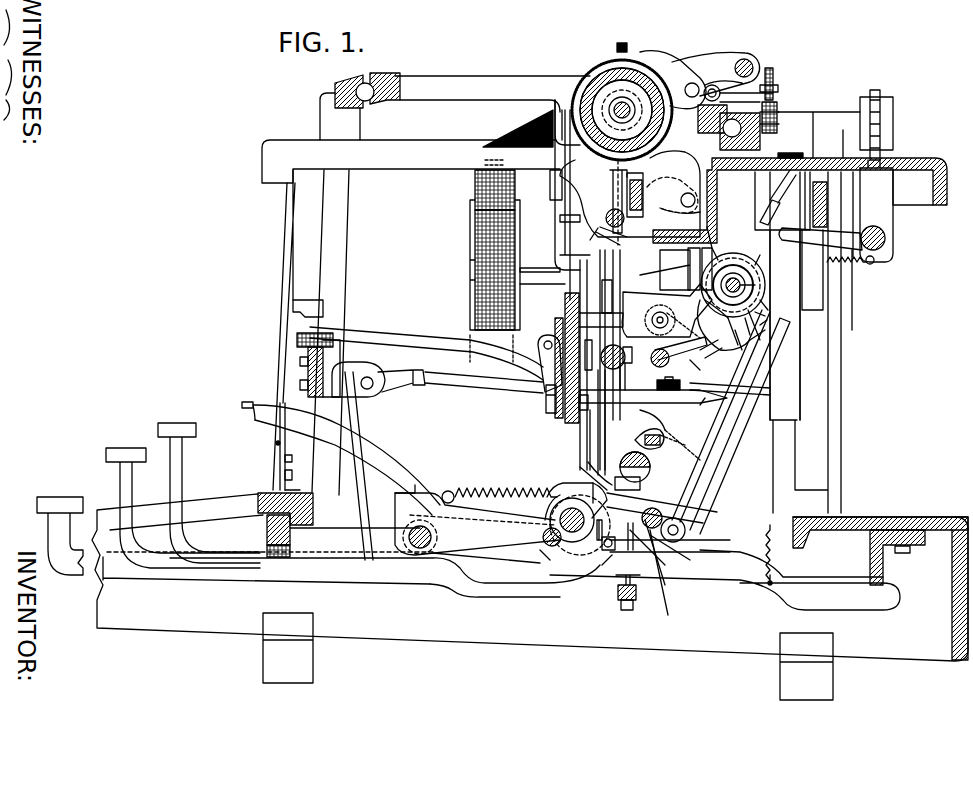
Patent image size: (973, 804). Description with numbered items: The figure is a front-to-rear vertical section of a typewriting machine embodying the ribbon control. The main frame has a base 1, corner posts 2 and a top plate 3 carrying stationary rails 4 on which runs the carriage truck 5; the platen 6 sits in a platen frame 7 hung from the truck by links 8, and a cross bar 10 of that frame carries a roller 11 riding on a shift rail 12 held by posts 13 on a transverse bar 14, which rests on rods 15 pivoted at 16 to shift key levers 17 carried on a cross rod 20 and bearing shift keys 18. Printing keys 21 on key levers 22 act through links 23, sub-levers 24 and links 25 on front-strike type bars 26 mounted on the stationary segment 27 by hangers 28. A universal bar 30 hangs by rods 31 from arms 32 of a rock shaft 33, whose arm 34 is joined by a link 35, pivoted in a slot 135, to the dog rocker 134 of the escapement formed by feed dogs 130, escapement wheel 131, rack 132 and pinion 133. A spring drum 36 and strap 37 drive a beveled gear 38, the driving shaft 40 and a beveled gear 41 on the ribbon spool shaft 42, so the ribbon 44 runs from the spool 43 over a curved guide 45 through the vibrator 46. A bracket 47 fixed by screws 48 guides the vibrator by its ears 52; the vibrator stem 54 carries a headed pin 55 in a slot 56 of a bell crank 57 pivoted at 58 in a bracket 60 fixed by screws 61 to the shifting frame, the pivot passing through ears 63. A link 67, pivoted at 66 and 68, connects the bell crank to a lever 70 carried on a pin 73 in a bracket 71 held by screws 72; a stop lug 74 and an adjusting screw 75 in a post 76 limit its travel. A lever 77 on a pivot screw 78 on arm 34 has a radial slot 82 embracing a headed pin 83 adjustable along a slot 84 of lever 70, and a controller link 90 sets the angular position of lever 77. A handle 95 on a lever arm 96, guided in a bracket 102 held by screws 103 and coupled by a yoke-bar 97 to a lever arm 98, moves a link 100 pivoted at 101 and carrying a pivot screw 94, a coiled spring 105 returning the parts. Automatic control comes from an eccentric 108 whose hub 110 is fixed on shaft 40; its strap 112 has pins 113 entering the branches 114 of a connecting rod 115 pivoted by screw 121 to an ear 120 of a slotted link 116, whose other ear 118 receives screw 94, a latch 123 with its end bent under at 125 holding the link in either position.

The base 1 is at (733, 508).
The corner posts 2 is at (344, 232).
The top plate 3 is at (398, 142).
The stationary rails 4 is at (345, 82).
The carriage truck 5 is at (457, 78).
The platen 6 is at (590, 80).
The platen frame 7 is at (718, 70).
The links 8 is at (677, 68).
The cross bar 10 is at (643, 216).
The roller 11 is at (611, 202).
The shift rail 12 is at (608, 215).
The posts 13 is at (628, 270).
The transverse bar 14 is at (603, 422).
The rods 15 is at (594, 440).
The pivot 16 is at (605, 550).
The shift key lever 17 is at (580, 580).
The shift key 18 is at (65, 497).
The cross rod 20 is at (438, 500).
The printing keys 21 is at (162, 432).
The key levers 22 is at (432, 584).
The links 23 is at (365, 418).
The sub-levers 24 is at (410, 390).
The links 25 is at (477, 390).
The front-strike type bars 26 is at (410, 330).
The stationary segment 27 is at (574, 368).
The hangers 28 is at (550, 408).
The universal bar 30 is at (637, 592).
The rods 31 is at (636, 576).
The arms 32 is at (631, 550).
The transverse rock shaft 33 is at (582, 520).
The arm 34 is at (686, 533).
The link 35 is at (714, 416).
The spring drum 36 is at (790, 367).
The strap 37 is at (788, 150).
The beveled gear 38 is at (766, 226).
The transverse driving shaft 40 is at (736, 278).
The beveled gear 41 is at (727, 240).
The ribbon spool shaft 42 is at (535, 285).
The ribbon spool 43 is at (472, 236).
The ribbon 44 is at (475, 185).
The curved guide 45 is at (485, 143).
The ribbon vibrator 46 is at (555, 108).
The bracket 47 is at (556, 252).
The screws 48 is at (560, 345).
The ears 52 is at (550, 183).
The bar or stem 54 is at (571, 210).
The headed pin 55 is at (607, 296).
The slot 56 is at (595, 355).
The bell crank 57 is at (670, 352).
The pivot 58 is at (668, 312).
The bracket 60 is at (656, 236).
The screws 61 is at (608, 236).
The ears 63 is at (648, 295).
The pivot 66 is at (627, 357).
The link 67 is at (683, 327).
The pivot 68 is at (716, 352).
The lever of the first order 70 is at (694, 370).
The bracket 71 is at (629, 376).
The screws 72 is at (580, 409).
The pin 73 is at (698, 432).
The stop lug 74 is at (638, 400).
The adjusting screw 75 is at (725, 392).
The post 76 is at (662, 380).
The lever 77 is at (642, 439).
The pivot screw 78 is at (639, 467).
The radial slot 82 is at (700, 455).
The headed pin 83 is at (645, 420).
The slot 84 is at (713, 404).
The link or controller 90 is at (690, 505).
The pivot screw 94 is at (600, 470).
The handle 95 is at (243, 410).
The lever arm 96 is at (372, 445).
The yoke-bar 97 is at (415, 488).
The lever arm 98 is at (462, 508).
The link 100 is at (562, 484).
The pivot 101 is at (550, 547).
The bracket 102 is at (280, 448).
The screws 103 is at (301, 468).
The coiled spring 105 is at (500, 490).
The eccentric 108 is at (748, 346).
The hub 110 is at (756, 284).
The strap 112 is at (761, 335).
The pins 113 is at (775, 301).
The branches 114 is at (775, 325).
The connecting rod 115 is at (665, 505).
The link 116 is at (630, 489).
The ear 118 is at (614, 528).
The ear 120 is at (667, 556).
The pivot screw 121 is at (663, 549).
The latch 123 is at (608, 558).
The bent end of latch 125 is at (672, 575).
The feed dogs 130 is at (884, 162).
The escapement wheel 131 is at (878, 92).
The rack 132 is at (769, 68).
The pinion 133 is at (774, 110).
The dog rocker 134 is at (880, 219).
The slot 135 is at (685, 547).